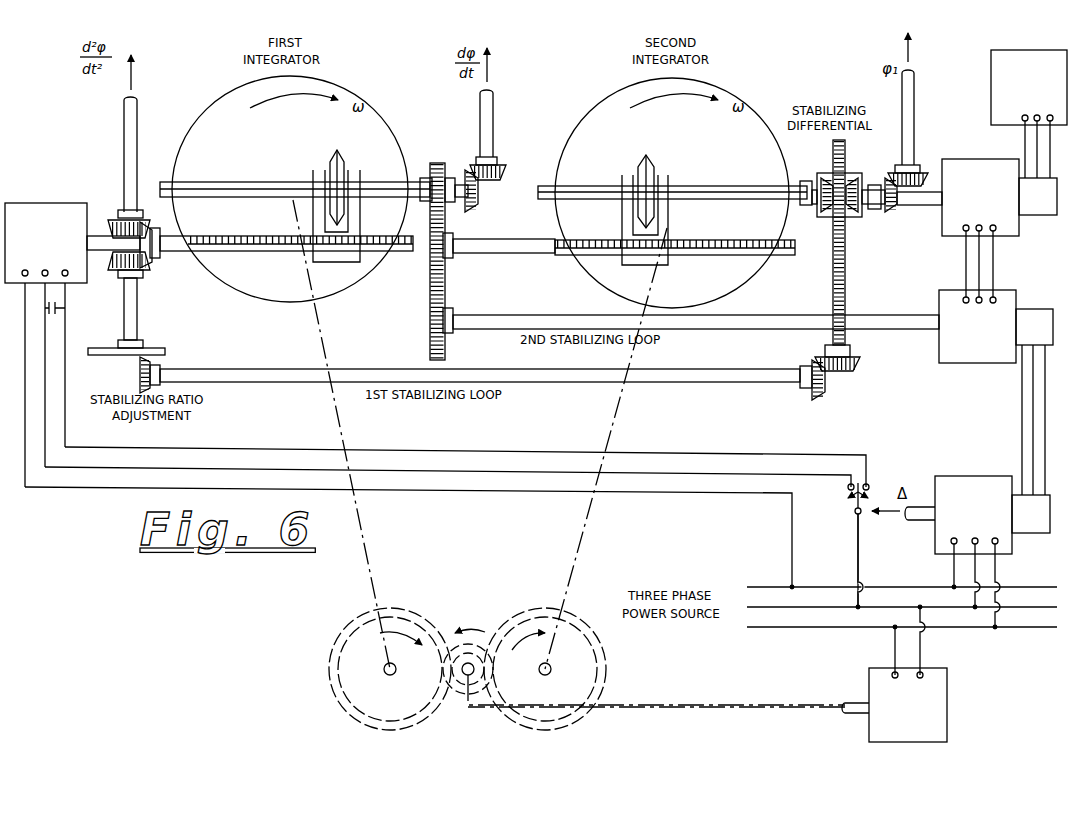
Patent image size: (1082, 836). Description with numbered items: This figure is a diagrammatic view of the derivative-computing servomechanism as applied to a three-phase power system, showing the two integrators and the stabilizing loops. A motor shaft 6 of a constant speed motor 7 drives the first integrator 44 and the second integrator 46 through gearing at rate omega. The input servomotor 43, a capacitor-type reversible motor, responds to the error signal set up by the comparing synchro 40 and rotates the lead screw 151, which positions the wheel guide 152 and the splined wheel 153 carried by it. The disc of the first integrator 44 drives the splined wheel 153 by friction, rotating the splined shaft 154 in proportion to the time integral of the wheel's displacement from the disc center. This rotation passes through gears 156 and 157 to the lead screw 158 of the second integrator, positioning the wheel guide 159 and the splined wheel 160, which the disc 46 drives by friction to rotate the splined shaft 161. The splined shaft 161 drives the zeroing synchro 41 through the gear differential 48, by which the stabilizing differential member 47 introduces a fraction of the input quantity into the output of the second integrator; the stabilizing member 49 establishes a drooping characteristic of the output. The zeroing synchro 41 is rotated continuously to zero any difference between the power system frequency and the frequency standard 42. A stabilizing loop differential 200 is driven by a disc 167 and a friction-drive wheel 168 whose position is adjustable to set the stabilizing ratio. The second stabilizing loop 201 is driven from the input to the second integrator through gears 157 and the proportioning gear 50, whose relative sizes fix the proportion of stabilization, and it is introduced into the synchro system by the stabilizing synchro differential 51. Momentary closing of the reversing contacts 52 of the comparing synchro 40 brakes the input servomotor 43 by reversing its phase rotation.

The motor shaft 6 is at (860, 703).
The constant speed motor 7 is at (947, 679).
The comparing synchro 40 is at (986, 468).
The zeroing synchro 41 is at (962, 140).
The frequency standard 42 is at (1025, 58).
The input servomotor 43 is at (45, 210).
The first integrator 44 is at (386, 118).
The second integrator 46 is at (580, 126).
The stabilizing differential member 47 is at (855, 216).
The gear differential 48 is at (829, 218).
The stabilizing member 49 is at (567, 313).
The proportioning gear 50 is at (446, 294).
The stabilizing synchro differential 51 is at (939, 298).
The reversing contacts 52 is at (870, 486).
The lead screw 151 is at (185, 252).
The wheel guide 152 is at (346, 258).
The splined wheel 153 is at (330, 156).
The splined shaft 154 is at (160, 183).
The gear 156 is at (447, 152).
The gear 157 is at (432, 260).
The lead screw 158 is at (540, 240).
The wheel guide 159 is at (640, 266).
The splined wheel 160 is at (645, 160).
The splined shaft 161 is at (731, 170).
The disc 167 is at (158, 348).
The friction-drive wheel 168 is at (140, 373).
The stabilizing loop differential 200 is at (396, 368).
The second stabilizing loop 201 is at (776, 300).